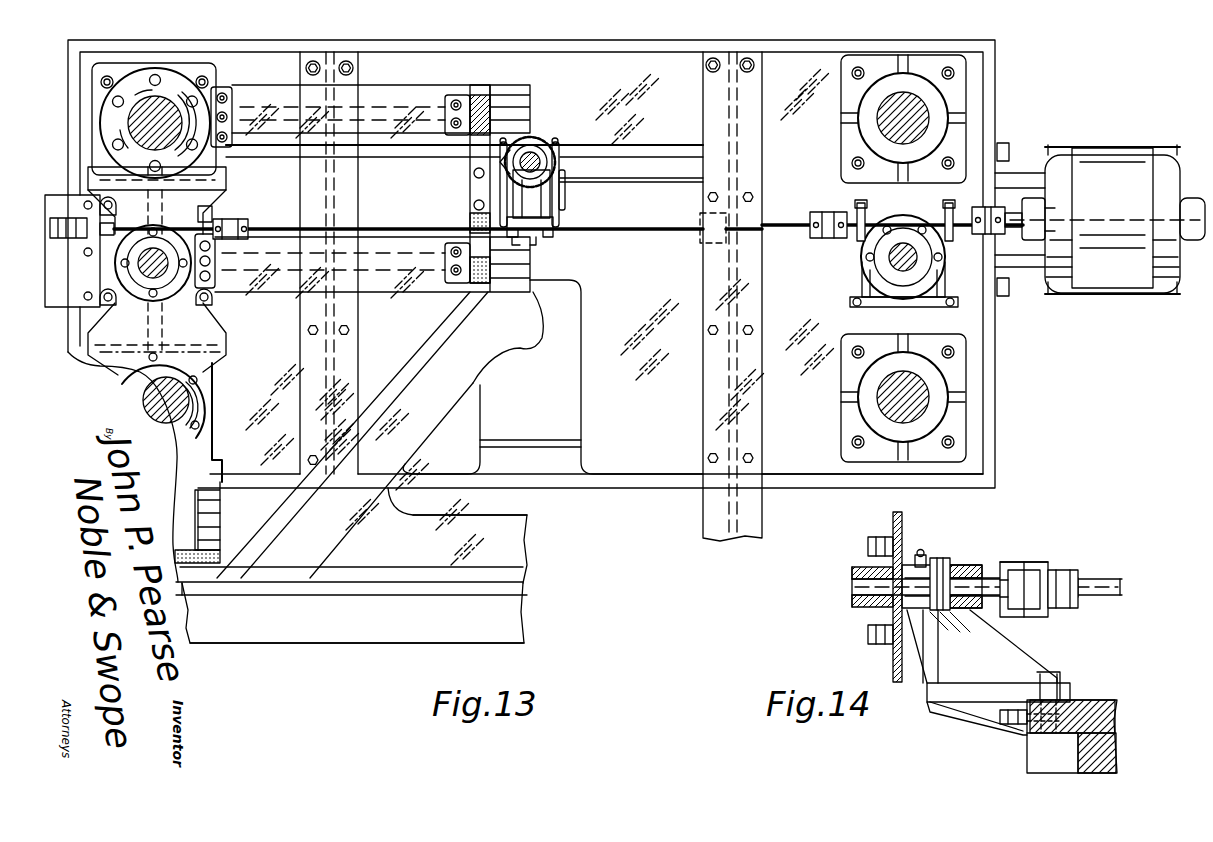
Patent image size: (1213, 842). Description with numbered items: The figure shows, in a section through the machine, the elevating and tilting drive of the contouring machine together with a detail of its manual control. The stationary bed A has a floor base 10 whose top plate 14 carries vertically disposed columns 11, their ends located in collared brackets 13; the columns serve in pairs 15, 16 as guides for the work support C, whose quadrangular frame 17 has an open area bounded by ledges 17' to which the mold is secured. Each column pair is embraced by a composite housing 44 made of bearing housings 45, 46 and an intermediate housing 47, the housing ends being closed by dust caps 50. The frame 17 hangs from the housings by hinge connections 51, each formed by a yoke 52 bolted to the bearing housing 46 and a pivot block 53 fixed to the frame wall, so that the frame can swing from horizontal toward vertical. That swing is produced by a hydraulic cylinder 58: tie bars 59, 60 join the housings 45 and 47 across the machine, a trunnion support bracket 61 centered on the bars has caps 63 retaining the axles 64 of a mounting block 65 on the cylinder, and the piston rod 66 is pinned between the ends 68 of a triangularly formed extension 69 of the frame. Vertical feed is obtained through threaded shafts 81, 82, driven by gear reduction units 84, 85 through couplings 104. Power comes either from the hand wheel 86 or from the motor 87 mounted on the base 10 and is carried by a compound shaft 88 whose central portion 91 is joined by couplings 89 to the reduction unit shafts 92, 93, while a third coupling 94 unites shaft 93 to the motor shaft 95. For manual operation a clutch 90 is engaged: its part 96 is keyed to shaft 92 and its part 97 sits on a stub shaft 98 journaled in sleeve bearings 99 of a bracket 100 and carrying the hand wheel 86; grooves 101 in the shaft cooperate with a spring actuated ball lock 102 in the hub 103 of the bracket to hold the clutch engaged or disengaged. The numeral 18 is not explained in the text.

In FIG. 13, the floor base 10 is at (650, 457).
In FIG. 14, the floor base 10 is at (1040, 749).
In FIG. 13, the columns 11 is at (178, 113).
In FIG. 13, the collared brackets 13 is at (185, 67).
In FIG. 13, the top plate 14 is at (968, 378).
In FIG. 14, the top plate 14 is at (1083, 722).
In FIG. 13, the pair of columns 15 is at (160, 108).
In FIG. 13, the pair of columns 16 is at (910, 98).
In FIG. 13, the frame 17 is at (373, 613).
In FIG. 13, the ledges 17' is at (357, 654).
In FIG. 13, the upright member 18 is at (300, 441).
In FIG. 13, the composite housing 44 is at (215, 319).
In FIG. 13, the bearing housing 45 is at (218, 162).
In FIG. 13, the bearing housing 46 is at (212, 346).
In FIG. 13, the intermediate housing 47 is at (212, 329).
In FIG. 13, the dust caps 50 is at (142, 297).
In FIG. 13, the hinge connections 51 is at (212, 525).
In FIG. 13, the yoke 52 is at (206, 512).
In FIG. 13, the pivot block 53 is at (198, 565).
In FIG. 13, the hydraulic cylinder 58 is at (540, 145).
In FIG. 13, the tie bar 59 is at (407, 98).
In FIG. 13, the tie bar 60 is at (380, 248).
In FIG. 13, the trunnion support bracket 61 is at (480, 130).
In FIG. 13, the caps 63 is at (468, 178).
In FIG. 13, the axles 64 is at (468, 201).
In FIG. 13, the mounting block 65 is at (566, 192).
In FIG. 13, the piston rod 66 is at (542, 158).
In FIG. 13, the ends 68 is at (540, 242).
In FIG. 13, the triangularly formed extension 69 is at (412, 418).
In FIG. 13, the threaded shaft 81 is at (162, 245).
In FIG. 13, the threaded shaft 82 is at (892, 292).
In FIG. 13, the gear reduction unit 84 is at (212, 212).
In FIG. 13, the gear reduction unit 85 is at (855, 280).
In FIG. 13, the hand wheel 86 is at (1020, 219).
In FIG. 14, the hand wheel 86 is at (890, 520).
In FIG. 13, the motor 87 is at (1106, 172).
In FIG. 13, the compound shaft 88 is at (592, 233).
In FIG. 13, the couplings 89 is at (250, 222).
In FIG. 13, the clutch 90 is at (79, 251).
In FIG. 14, the clutch 90 is at (1035, 560).
In FIG. 13, the central portion of the shaft 91 is at (638, 226).
In FIG. 13, the shaft of the reduction unit 92 is at (230, 219).
In FIG. 14, the shaft of the reduction unit 92 is at (1100, 585).
In FIG. 13, the shaft of the reduction unit 93 is at (857, 233).
In FIG. 13, the coupling 94 is at (990, 208).
In FIG. 13, the motor shaft 95 is at (1010, 228).
In FIG. 14, the clutch part 96 is at (1058, 572).
In FIG. 14, the clutch part 97 is at (1013, 561).
In FIG. 14, the stub shaft 98 is at (983, 577).
In FIG. 14, the sleeve bearings 99 is at (947, 627).
In FIG. 14, the bracket 100 is at (990, 660).
In FIG. 14, the grooves 101 is at (942, 565).
In FIG. 14, the spring actuated ball lock 102 is at (921, 552).
In FIG. 14, the hub 103 is at (965, 560).
In FIG. 13, the couplings 104 is at (920, 292).
In FIG. 13, the stationary bed A is at (592, 495).
In FIG. 13, the support for the work C is at (500, 553).